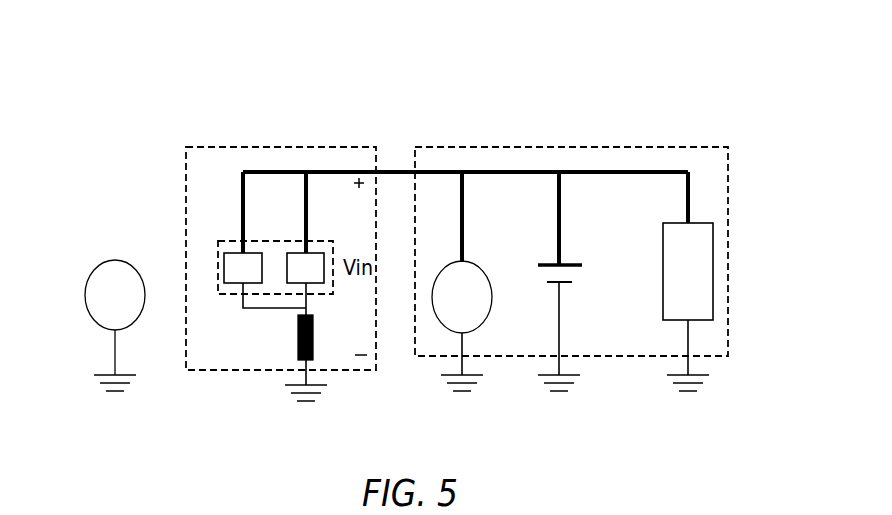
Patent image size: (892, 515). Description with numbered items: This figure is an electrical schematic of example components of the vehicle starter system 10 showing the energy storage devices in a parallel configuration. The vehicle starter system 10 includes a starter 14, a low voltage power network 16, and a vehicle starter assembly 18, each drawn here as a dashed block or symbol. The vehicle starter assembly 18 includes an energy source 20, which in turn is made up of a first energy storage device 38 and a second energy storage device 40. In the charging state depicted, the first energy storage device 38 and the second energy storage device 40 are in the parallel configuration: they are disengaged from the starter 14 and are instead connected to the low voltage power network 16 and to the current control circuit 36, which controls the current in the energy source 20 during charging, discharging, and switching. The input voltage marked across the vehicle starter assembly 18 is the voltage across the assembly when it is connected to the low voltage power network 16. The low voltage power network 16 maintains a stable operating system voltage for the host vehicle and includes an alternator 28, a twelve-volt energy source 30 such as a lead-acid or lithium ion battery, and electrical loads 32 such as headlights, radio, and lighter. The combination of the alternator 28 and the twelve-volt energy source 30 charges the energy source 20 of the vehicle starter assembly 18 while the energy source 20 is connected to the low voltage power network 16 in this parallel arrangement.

The vehicle starter system 10 is at (604, 56).
The starter 14 is at (96, 268).
The low voltage power network 16 is at (715, 147).
The vehicle starter assembly 18 is at (200, 147).
The energy source 20 is at (233, 266).
The alternator 28 is at (485, 322).
The 12-volt energy source 30 is at (572, 282).
The electrical loads 32 is at (713, 245).
The current control circuit 36 is at (298, 345).
The first energy storage device 38 is at (323, 253).
The second energy storage device 40 is at (233, 284).